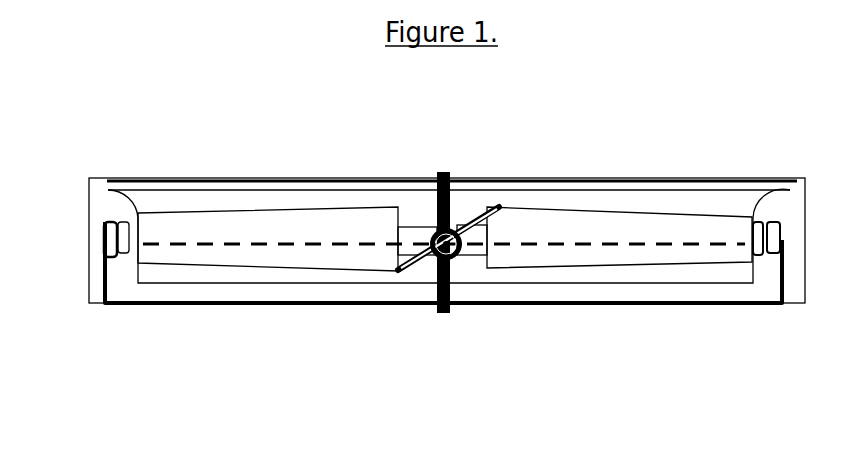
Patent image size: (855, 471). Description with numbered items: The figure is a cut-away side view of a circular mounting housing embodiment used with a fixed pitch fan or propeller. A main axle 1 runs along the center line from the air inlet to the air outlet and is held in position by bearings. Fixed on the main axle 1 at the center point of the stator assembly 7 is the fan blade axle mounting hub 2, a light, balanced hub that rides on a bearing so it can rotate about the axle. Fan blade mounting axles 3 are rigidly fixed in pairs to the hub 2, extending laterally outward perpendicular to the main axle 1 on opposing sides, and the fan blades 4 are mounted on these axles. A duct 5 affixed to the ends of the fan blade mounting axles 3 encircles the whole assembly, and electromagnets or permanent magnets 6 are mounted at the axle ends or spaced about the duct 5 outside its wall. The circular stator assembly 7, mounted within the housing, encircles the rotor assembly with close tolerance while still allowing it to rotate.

The main axle 1 is at (450, 283).
The fan blade axle mounting hub 2 is at (417, 230).
The fan blade mounting axle 3 is at (373, 240).
The fan blade 4 is at (297, 252).
The duct 5 is at (232, 273).
The magnet 6 is at (128, 252).
The stator assembly 7 is at (97, 243).